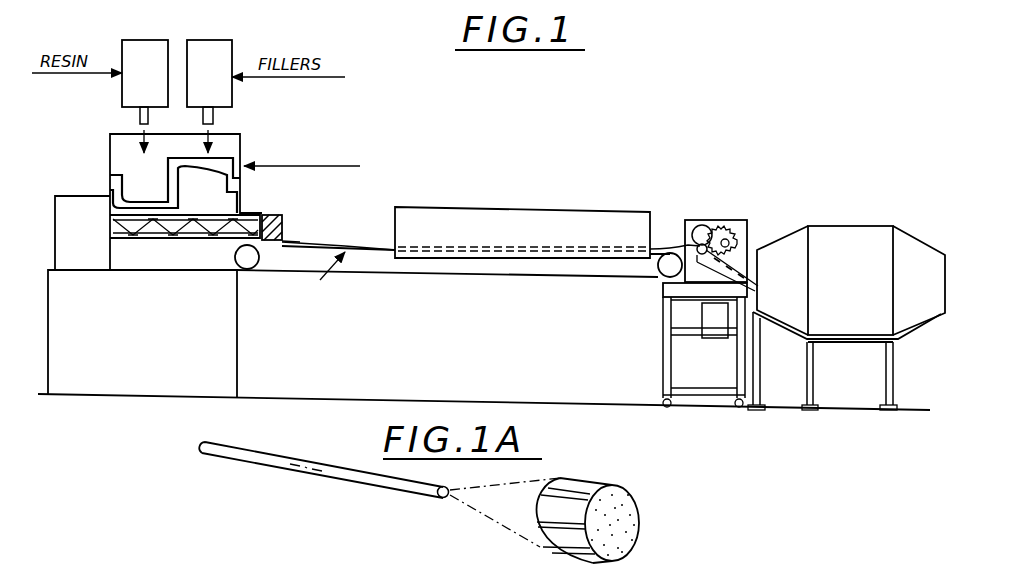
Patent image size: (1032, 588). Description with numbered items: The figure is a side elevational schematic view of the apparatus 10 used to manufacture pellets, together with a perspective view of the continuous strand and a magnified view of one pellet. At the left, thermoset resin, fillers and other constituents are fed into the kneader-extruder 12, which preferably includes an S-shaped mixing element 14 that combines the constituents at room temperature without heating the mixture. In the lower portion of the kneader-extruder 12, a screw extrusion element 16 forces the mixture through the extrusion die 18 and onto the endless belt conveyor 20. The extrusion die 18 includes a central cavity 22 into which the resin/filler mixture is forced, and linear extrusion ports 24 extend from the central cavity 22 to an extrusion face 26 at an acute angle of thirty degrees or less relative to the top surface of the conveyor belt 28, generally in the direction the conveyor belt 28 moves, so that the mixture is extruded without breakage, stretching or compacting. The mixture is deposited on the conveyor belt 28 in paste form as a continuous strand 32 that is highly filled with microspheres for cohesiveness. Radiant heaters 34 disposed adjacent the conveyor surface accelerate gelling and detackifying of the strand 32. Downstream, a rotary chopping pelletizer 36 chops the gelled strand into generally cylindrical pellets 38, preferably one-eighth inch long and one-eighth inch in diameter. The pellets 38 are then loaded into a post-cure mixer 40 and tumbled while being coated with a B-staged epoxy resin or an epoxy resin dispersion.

In FIG. 1, the apparatus 10 is at (612, 123).
In FIG. 1, the kneader-extruder 12 is at (122, 145).
In FIG. 1, the S-shaped mixing element 14 is at (220, 167).
In FIG. 1, the screw extrusion element 16 is at (120, 223).
In FIG. 1, the extrusion die 18 is at (286, 214).
In FIG. 1, the endless belt conveyor 20 is at (241, 263).
In FIG. 1, the central cavity 22 is at (273, 207).
In FIG. 1, the linear extrusion ports 24 is at (273, 243).
In FIG. 1, the extrusion face 26 is at (282, 241).
In FIG. 1, the conveyor belt 28 is at (330, 240).
In FIG. 1, the continuous strand 32 is at (378, 244).
In FIG. 1A, the continuous strand 32 is at (300, 467).
In FIG. 1, the radiant heater 34 is at (468, 225).
In FIG. 1, the rotary chopping pelletizer 36 is at (712, 220).
In FIG. 1, the pellets 38 is at (752, 285).
In FIG. 1A, the pellets 38 is at (597, 482).
In FIG. 1, the post-cure mixer 40 is at (888, 200).